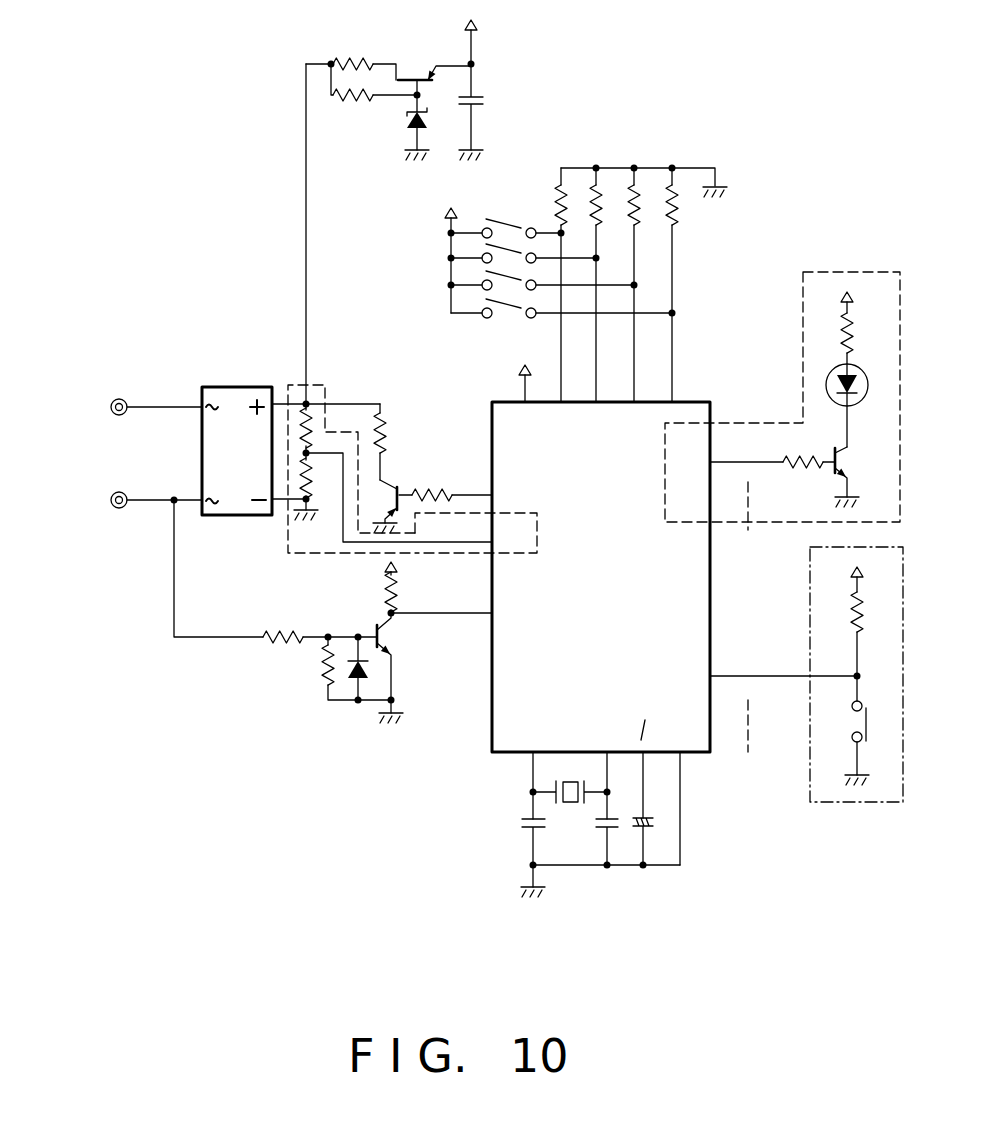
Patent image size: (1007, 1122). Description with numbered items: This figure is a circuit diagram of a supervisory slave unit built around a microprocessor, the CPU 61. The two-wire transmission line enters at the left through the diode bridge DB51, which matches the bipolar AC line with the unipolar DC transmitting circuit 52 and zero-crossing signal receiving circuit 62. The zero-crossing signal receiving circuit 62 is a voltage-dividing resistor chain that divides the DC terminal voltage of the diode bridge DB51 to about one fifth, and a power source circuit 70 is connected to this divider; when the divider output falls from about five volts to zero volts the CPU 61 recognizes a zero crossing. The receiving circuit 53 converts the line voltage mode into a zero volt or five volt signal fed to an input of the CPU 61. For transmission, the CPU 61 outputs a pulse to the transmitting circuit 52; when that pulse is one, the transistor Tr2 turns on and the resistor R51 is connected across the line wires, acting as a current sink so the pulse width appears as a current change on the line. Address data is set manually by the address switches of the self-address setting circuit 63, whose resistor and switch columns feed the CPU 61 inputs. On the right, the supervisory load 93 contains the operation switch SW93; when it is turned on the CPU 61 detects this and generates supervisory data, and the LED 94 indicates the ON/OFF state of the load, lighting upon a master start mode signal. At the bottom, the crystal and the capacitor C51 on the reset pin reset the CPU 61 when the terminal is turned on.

The power source circuit 70 is at (408, 28).
The self-address setting circuit 63 is at (645, 150).
The microprocessor (CPU) 61 is at (492, 703).
The zero-crossing signal receiving circuit 62 is at (326, 557).
The signal transmitting circuit 52 is at (479, 473).
The signal receiving circuit 53 is at (256, 693).
The LED 94 is at (836, 272).
The supervisory load 93 is at (810, 640).
The diode bridge DB51 is at (162, 457).
The resistor R51 is at (402, 442).
The transistor Tr2 is at (432, 494).
The operation switch SW93 is at (888, 715).
The capacitor C51 is at (600, 827).